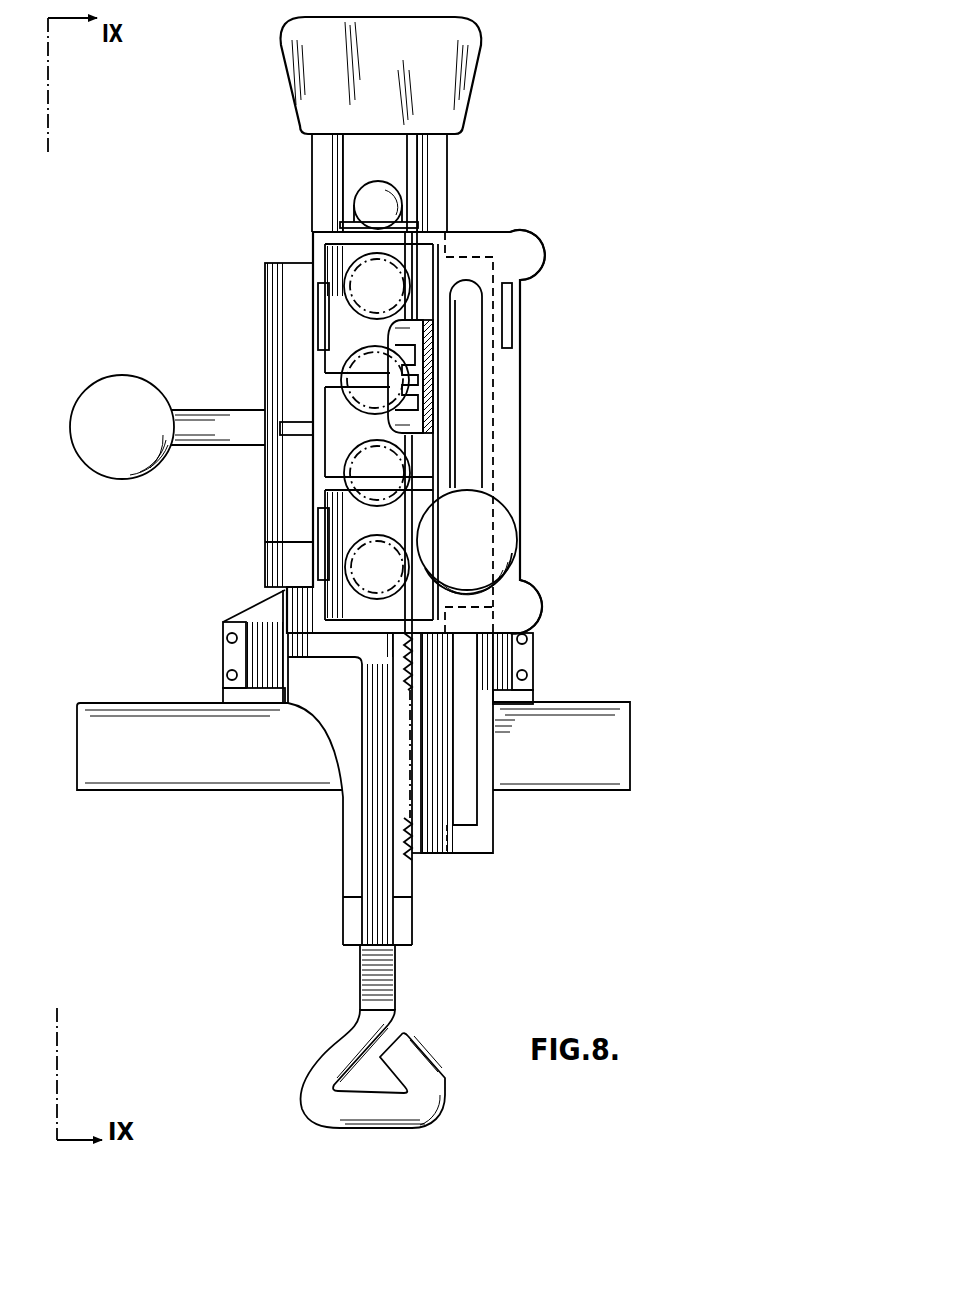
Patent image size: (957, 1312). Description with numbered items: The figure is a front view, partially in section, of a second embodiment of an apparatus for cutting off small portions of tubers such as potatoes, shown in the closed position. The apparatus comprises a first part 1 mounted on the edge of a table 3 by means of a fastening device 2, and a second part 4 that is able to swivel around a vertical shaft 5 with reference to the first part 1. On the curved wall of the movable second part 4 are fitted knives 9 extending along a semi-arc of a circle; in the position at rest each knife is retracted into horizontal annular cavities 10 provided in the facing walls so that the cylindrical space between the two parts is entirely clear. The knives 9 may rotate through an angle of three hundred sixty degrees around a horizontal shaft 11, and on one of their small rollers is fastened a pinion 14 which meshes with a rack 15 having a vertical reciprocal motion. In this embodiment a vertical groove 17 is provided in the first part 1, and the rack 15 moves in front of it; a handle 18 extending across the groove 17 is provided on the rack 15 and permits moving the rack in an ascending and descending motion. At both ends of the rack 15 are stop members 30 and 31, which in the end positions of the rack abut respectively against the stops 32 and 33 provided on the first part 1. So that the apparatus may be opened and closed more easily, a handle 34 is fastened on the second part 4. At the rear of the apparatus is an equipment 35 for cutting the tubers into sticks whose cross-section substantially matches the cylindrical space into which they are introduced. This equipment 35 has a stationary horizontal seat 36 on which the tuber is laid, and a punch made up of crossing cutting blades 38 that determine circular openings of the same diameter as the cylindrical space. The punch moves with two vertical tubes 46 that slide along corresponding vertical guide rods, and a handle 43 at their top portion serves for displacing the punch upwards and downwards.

The first part 1 is at (409, 439).
The fastening device 2 is at (330, 896).
The table 3 is at (565, 778).
The second part 4 is at (288, 503).
The vertical shaft 5 is at (405, 207).
The knives 9 is at (430, 380).
The horizontal annular cavities 10 is at (432, 383).
The horizontal shaft 11 is at (355, 357).
The pinion 14 is at (350, 265).
The rack 15 is at (485, 805).
The vertical groove 17 is at (470, 456).
The handle 18 is at (483, 541).
The stop member 30 is at (463, 852).
The stop member 31 is at (478, 243).
The stop 32 is at (470, 617).
The stop 33 is at (455, 245).
The handle 34 is at (100, 447).
The equipment 35 is at (408, 155).
The stationary horizontal seat 36 is at (228, 691).
The cutting blades 38 is at (265, 620).
The handle 43 is at (455, 50).
The vertical tubes 46 is at (432, 162).